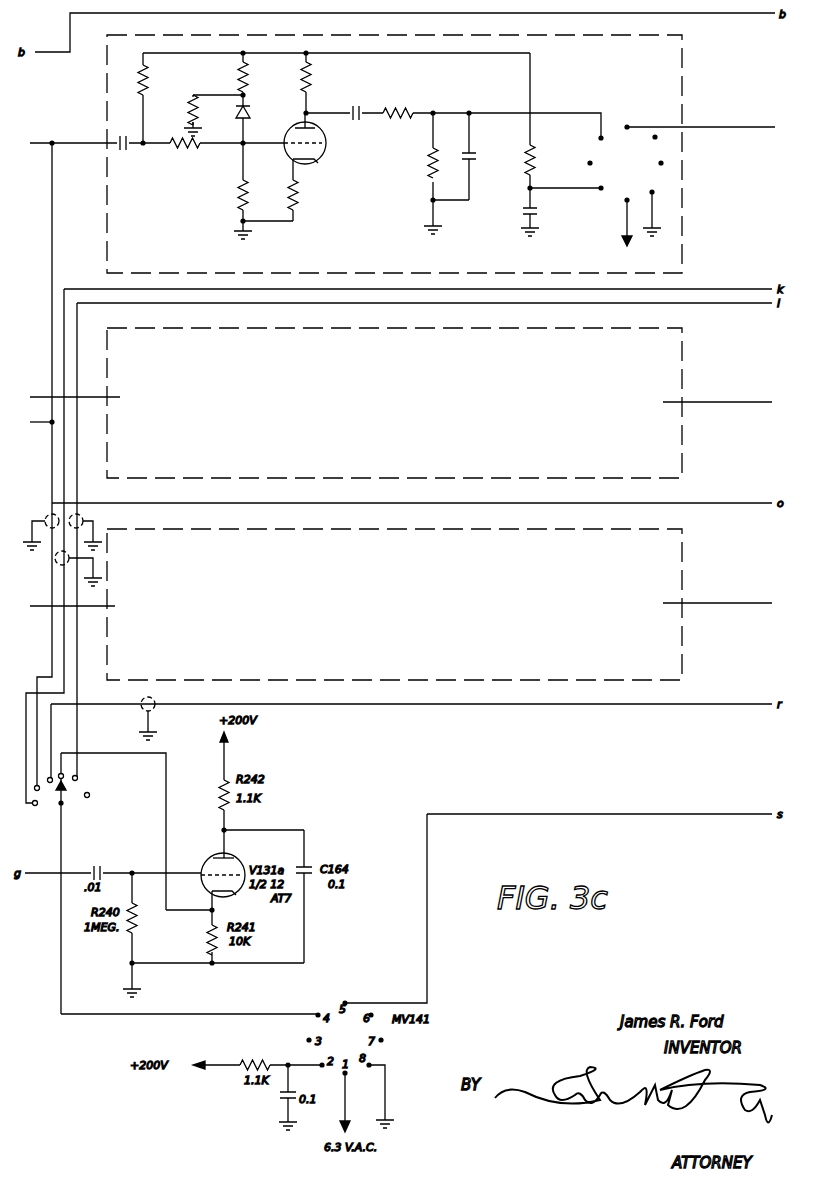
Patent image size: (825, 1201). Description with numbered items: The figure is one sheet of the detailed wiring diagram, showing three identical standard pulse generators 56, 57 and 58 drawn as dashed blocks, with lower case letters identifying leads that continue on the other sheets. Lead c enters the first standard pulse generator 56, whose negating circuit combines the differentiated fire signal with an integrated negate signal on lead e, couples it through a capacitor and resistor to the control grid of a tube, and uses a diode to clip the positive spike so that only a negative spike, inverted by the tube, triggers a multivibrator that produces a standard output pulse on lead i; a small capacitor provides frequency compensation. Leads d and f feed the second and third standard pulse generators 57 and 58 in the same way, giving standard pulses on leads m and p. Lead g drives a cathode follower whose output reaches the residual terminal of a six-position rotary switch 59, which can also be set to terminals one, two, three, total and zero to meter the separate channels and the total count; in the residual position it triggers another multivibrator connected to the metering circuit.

The standard pulse generator 56 is at (400, 154).
The standard pulse generator 57 is at (403, 403).
The standard pulse generator 58 is at (401, 604).
The six-position rotary switch 59 is at (65, 797).